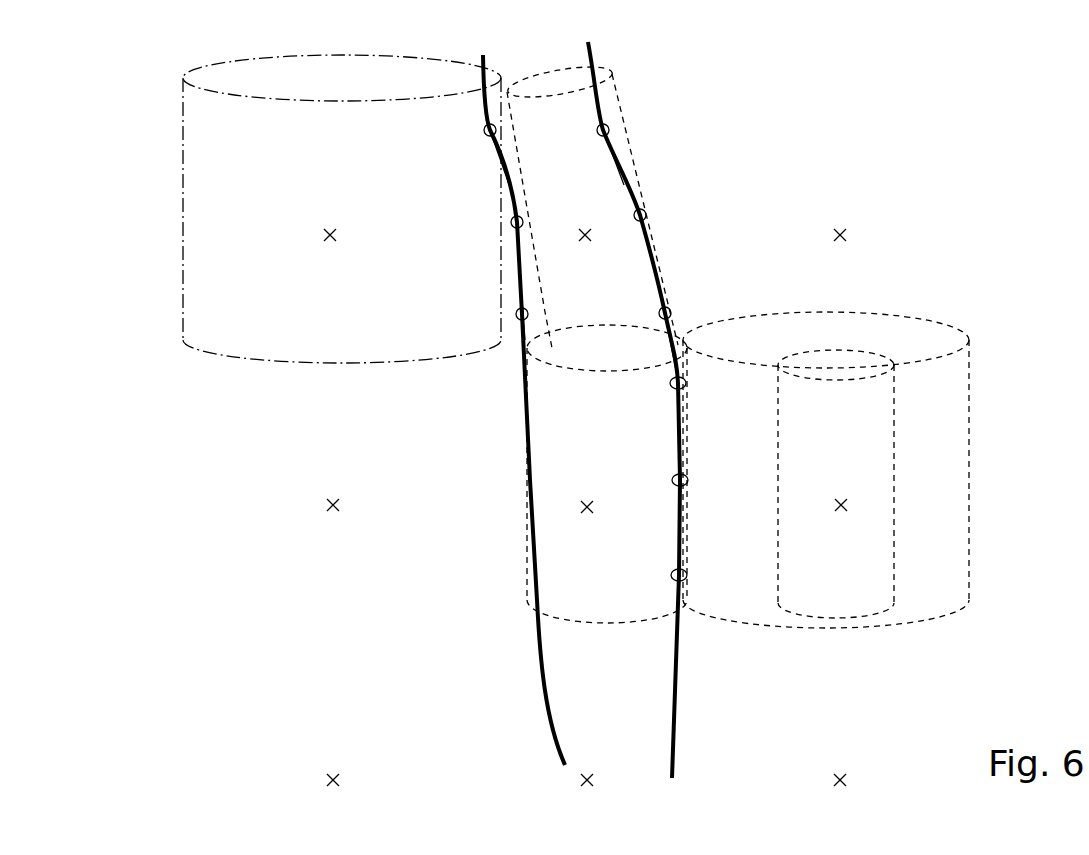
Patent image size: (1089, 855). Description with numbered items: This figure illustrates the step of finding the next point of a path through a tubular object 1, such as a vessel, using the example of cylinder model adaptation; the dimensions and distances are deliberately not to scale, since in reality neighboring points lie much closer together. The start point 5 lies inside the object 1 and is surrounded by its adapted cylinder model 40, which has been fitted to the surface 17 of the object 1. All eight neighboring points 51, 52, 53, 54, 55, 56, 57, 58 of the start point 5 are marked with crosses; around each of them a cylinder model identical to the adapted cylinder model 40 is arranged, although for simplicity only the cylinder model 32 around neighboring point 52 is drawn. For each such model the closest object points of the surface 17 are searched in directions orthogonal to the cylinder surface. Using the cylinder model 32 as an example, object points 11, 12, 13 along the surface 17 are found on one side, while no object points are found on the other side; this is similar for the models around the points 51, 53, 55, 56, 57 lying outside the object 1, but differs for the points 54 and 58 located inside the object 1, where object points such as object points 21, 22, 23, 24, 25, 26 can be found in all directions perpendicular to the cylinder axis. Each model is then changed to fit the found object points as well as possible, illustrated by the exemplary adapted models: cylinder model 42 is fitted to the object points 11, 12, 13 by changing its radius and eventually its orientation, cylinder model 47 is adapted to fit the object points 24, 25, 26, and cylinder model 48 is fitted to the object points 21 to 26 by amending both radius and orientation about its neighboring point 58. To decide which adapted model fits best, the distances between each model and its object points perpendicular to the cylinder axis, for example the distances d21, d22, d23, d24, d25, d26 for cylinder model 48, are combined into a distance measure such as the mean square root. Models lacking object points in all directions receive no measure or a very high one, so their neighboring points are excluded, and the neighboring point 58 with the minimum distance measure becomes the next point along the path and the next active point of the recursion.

The tubular object 1 is at (676, 675).
The start point 5 is at (581, 507).
The object point 11 is at (670, 384).
The object point 12 is at (672, 480).
The object point 13 is at (671, 575).
The surface 17 is at (538, 675).
The object point 21 is at (610, 136).
The object point 22 is at (646, 210).
The object point 23 is at (672, 312).
The object point 24 is at (484, 132).
The object point 25 is at (511, 222).
The object point 26 is at (516, 316).
The cylinder model 32 is at (894, 490).
The adapted cylinder model 40 is at (567, 622).
The adapted cylinder model 42 is at (969, 545).
The adapted cylinder model 47 is at (337, 363).
The adapted cylinder model 48 is at (618, 90).
The neighboring point 51 is at (840, 229).
The neighboring point 52 is at (841, 511).
The neighboring point 53 is at (840, 774).
The neighboring point 54 is at (587, 774).
The neighboring point 55 is at (333, 774).
The neighboring point 56 is at (333, 511).
The neighboring point 57 is at (330, 229).
The neighboring point 58 is at (585, 229).
The distance d21 is at (615, 126).
The distance d22 is at (648, 222).
The distance d23 is at (668, 305).
The distance d24 is at (500, 145).
The distance d25 is at (520, 240).
The distance d26 is at (533, 308).